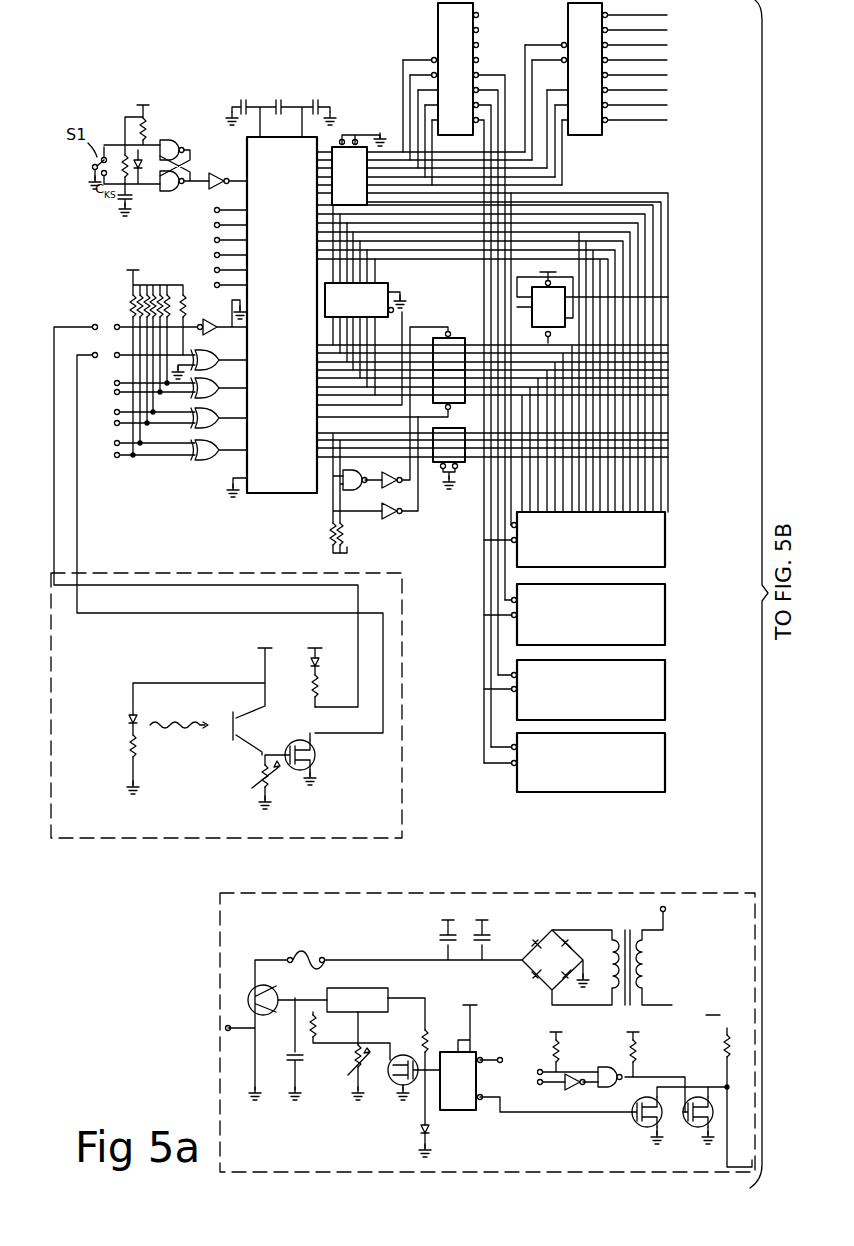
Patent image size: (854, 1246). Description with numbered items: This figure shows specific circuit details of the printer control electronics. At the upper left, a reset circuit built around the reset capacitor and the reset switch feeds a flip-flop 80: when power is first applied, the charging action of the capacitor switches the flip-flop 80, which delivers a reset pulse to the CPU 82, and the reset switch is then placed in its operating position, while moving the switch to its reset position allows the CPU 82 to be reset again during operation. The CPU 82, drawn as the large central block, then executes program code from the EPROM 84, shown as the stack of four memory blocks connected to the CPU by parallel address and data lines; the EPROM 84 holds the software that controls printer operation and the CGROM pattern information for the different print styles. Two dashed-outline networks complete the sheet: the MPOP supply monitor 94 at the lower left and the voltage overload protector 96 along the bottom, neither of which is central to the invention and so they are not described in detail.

The flip-flop 80 is at (166, 140).
The CPU 82 is at (292, 306).
The EPROM 84 is at (574, 652).
The MPOP supply monitor 94 is at (115, 840).
The voltage overload protector 96 is at (232, 983).